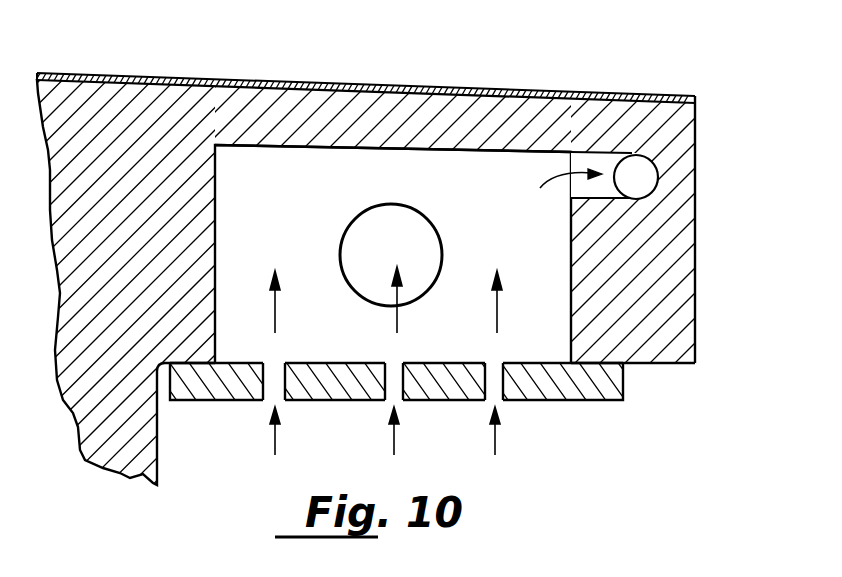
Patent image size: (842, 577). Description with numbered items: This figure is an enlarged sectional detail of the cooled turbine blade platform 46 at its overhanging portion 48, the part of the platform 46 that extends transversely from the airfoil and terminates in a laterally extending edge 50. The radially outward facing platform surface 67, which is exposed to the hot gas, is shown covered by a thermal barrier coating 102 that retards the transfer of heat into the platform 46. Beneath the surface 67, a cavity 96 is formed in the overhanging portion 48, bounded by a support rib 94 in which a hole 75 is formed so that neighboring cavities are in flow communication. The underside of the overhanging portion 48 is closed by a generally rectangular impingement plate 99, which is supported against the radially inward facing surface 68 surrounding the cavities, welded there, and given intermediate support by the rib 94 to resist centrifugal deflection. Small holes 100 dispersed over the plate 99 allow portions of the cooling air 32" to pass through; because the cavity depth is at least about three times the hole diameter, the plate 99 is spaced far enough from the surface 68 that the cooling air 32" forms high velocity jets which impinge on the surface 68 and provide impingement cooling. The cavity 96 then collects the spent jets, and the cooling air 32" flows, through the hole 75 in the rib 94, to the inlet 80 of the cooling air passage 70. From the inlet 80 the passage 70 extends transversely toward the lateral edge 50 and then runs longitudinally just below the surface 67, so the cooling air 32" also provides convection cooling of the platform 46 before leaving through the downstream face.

The platform portion 46 is at (365, 65).
The thermal barrier coating 102 is at (210, 78).
The overhanging portion 48 is at (335, 85).
The radially outward facing platform surface 67 is at (417, 87).
The support rib 94 is at (508, 172).
The radially inward facing surface 68 is at (348, 148).
The cavity 96 is at (287, 222).
The hole 75 is at (379, 248).
The cooling air passage 70 is at (607, 153).
The inlet 80 is at (568, 186).
The laterally extending edge 50 is at (696, 206).
The impingement plate 99 is at (413, 288).
The holes 100 is at (285, 402).
The slot spacing dimension 32 is at (396, 445).